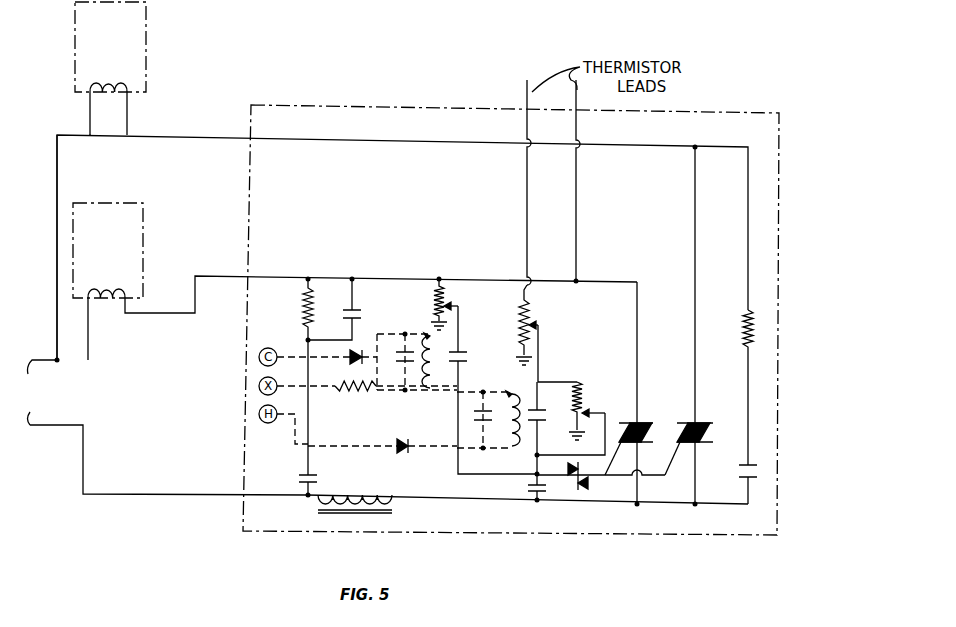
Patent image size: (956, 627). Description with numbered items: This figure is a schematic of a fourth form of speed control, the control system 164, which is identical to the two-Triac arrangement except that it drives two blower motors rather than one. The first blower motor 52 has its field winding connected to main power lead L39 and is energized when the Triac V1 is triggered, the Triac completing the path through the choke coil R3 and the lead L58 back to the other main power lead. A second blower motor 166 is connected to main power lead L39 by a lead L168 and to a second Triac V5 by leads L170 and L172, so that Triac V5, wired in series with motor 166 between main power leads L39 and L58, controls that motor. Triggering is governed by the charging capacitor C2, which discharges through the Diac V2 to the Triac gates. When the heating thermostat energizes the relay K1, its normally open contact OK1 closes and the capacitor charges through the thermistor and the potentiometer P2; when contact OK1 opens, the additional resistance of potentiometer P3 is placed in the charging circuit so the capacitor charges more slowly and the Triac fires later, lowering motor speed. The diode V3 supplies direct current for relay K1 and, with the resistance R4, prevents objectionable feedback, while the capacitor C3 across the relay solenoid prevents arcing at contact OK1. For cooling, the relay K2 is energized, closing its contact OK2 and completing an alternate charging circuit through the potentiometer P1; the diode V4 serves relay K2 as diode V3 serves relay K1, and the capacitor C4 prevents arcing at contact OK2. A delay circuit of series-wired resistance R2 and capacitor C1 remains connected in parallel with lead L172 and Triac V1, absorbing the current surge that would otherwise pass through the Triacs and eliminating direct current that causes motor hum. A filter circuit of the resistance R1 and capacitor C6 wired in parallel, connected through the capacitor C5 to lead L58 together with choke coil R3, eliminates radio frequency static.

The control system 164 is at (273, 57).
The second blower motor 166 is at (140, 68).
The motor 52 is at (140, 240).
The lead L168 is at (57, 246).
The lead L170 is at (393, 141).
The lead L172 is at (695, 219).
The main lead L39 is at (52, 358).
The lead L58 is at (120, 493).
The resistance R1 is at (298, 376).
The resistance R2 is at (758, 385).
The choke coil R3 is at (355, 491).
The resistance R4 is at (367, 396).
The capacitor C1 is at (755, 475).
The charging capacitor C2 is at (524, 493).
The capacitor C3 is at (484, 420).
The capacitor C4 is at (417, 362).
The capacitor C5 is at (318, 483).
The capacitor C6 is at (345, 309).
The potentiometer P1 is at (456, 304).
The potentiometer P2 is at (546, 333).
The potentiometer P3 is at (571, 418).
The relay K1 is at (521, 418).
The relay K2 is at (437, 360).
The normally open contact OK1 is at (547, 433).
The normally open contact OK2 is at (493, 390).
The Triac V1 is at (632, 394).
The Diac V2 is at (601, 482).
The diode V3 is at (367, 444).
The diode V4 is at (327, 351).
The Triac V5 is at (691, 455).